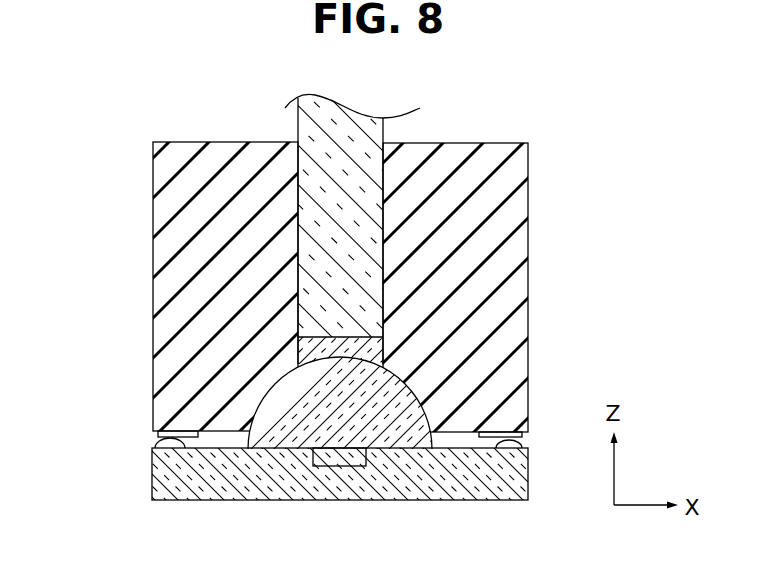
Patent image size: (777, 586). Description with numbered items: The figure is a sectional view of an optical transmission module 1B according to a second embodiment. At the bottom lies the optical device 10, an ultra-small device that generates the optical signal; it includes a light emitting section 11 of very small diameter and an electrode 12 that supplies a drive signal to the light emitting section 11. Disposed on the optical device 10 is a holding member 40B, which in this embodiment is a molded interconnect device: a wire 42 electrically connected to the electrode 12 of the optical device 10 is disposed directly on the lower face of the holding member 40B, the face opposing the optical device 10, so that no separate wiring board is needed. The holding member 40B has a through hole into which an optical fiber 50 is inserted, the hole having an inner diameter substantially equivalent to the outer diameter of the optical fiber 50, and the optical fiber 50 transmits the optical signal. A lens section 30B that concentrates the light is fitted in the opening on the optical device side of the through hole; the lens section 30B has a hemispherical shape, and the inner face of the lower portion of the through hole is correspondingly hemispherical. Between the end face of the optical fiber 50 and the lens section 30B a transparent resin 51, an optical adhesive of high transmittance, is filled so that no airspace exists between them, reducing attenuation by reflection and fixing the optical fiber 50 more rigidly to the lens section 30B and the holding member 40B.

The optical transmission module 1B is at (608, 212).
The optical device 10 is at (152, 484).
The light emitting section 11 is at (333, 466).
The electrode 12 is at (160, 443).
The lens section 30B is at (273, 383).
The holding member 40B is at (153, 182).
The wire 42 is at (525, 437).
The optical fiber 50 is at (298, 127).
The transparent resin 51 is at (383, 349).